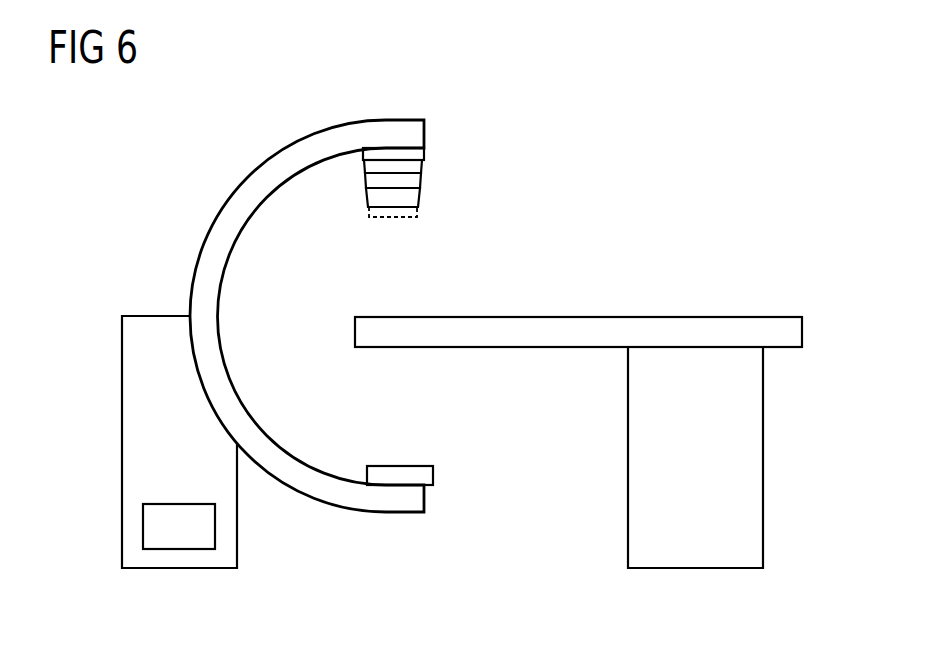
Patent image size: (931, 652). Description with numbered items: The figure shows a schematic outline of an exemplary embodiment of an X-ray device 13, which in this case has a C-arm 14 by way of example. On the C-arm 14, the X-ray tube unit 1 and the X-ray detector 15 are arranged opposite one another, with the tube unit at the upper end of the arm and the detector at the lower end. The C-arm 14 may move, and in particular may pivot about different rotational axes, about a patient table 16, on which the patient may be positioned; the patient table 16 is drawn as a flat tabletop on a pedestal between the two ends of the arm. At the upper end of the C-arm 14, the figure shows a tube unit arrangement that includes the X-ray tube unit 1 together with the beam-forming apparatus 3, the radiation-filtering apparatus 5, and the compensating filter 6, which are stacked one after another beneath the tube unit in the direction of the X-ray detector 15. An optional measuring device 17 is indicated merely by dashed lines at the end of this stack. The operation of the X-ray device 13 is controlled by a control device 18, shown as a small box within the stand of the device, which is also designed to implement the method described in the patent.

The X-ray tube unit 1 is at (426, 154).
The beam-forming apparatus 3 is at (424, 160).
The radiation-filtering apparatus 5 is at (422, 177).
The compensating filter 6 is at (419, 197).
The X-ray device 13 is at (718, 157).
The C-arm 14 is at (268, 160).
The X-ray detector 15 is at (435, 475).
The patient table 16 is at (764, 455).
The measuring device 17 is at (366, 207).
The control device 18 is at (143, 525).